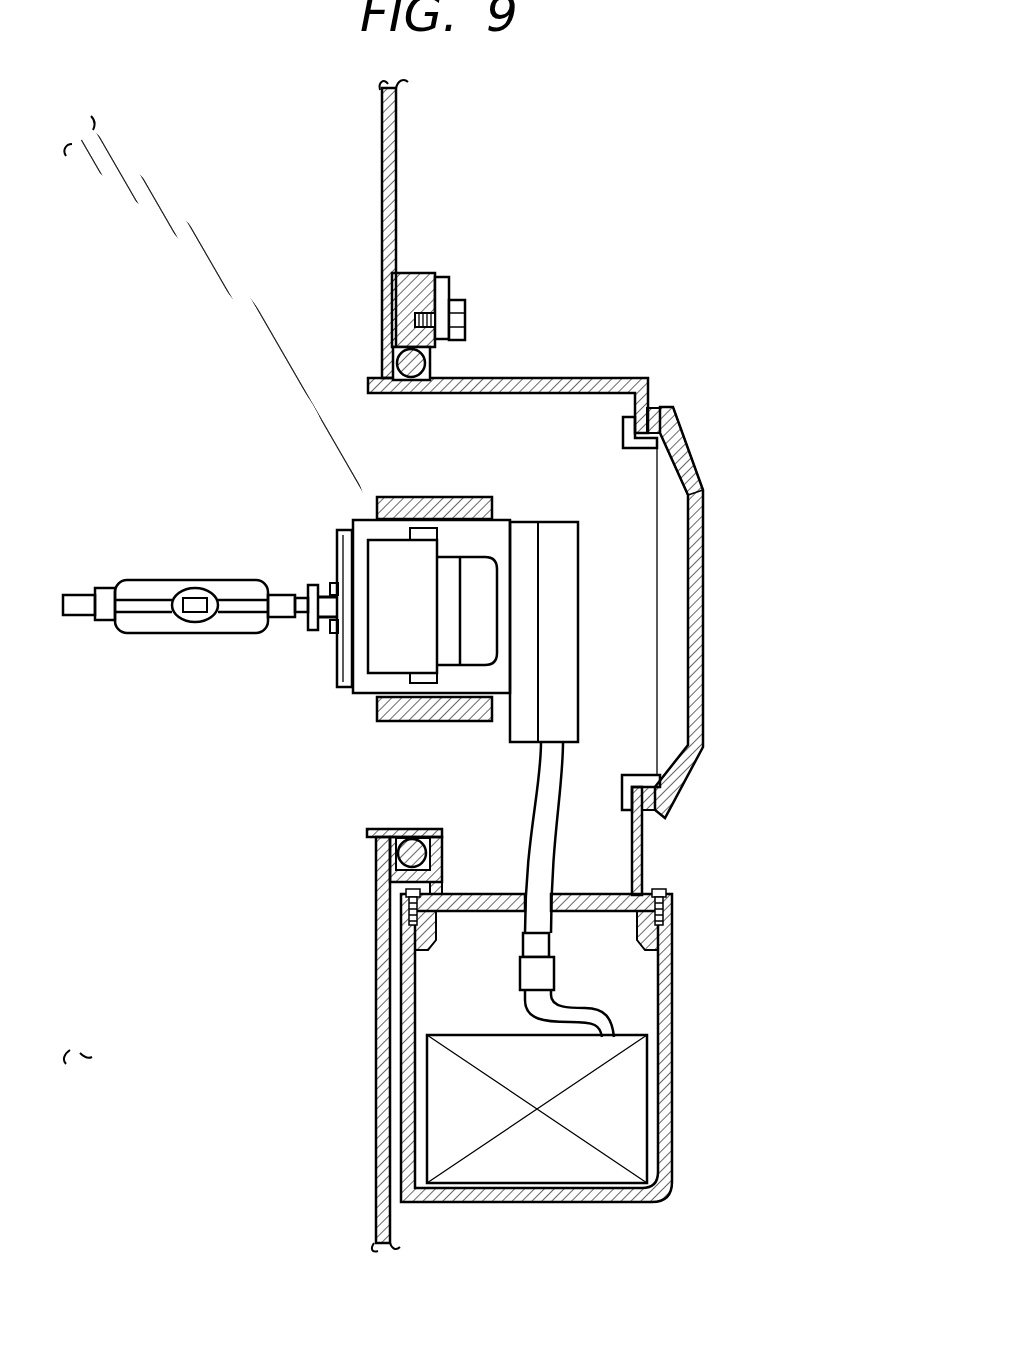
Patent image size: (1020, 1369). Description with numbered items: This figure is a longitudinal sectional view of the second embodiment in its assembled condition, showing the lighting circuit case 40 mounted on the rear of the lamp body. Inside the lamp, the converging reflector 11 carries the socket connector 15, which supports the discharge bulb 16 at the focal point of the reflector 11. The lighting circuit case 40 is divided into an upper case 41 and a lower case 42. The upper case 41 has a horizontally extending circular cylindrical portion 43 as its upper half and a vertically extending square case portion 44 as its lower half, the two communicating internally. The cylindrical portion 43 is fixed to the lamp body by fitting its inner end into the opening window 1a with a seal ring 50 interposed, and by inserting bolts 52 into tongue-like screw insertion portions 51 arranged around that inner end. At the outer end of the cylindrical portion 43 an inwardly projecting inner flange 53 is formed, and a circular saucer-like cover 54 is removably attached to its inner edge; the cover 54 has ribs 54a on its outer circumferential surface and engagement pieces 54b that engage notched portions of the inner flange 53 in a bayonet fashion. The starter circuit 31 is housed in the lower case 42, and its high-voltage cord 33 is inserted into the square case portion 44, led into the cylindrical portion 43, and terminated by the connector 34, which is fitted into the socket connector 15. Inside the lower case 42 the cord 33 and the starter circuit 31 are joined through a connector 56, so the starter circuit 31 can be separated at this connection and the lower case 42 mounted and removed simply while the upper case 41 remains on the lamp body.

The opening window 1a is at (370, 837).
The converging reflector 11 is at (183, 953).
The socket connector 15 is at (385, 575).
The discharge bulb 16 is at (148, 580).
The starter circuit 31 is at (580, 1167).
The cord 33 is at (567, 768).
The connector 34 is at (560, 640).
The lighting circuit case 40 is at (548, 325).
The upper case 41 is at (687, 780).
The lower case 42 is at (660, 1082).
The circular cylindrical portion 43 is at (540, 377).
The square case portion 44 is at (640, 857).
The seal ring 50 is at (412, 392).
The screw insertion portions 51 is at (440, 293).
The bolts 52 is at (467, 307).
The inner flange 53 is at (653, 405).
The cover 54 is at (714, 601).
The ribs 54a is at (675, 450).
The engagement pieces 54b is at (620, 417).
The connector 56 is at (540, 968).